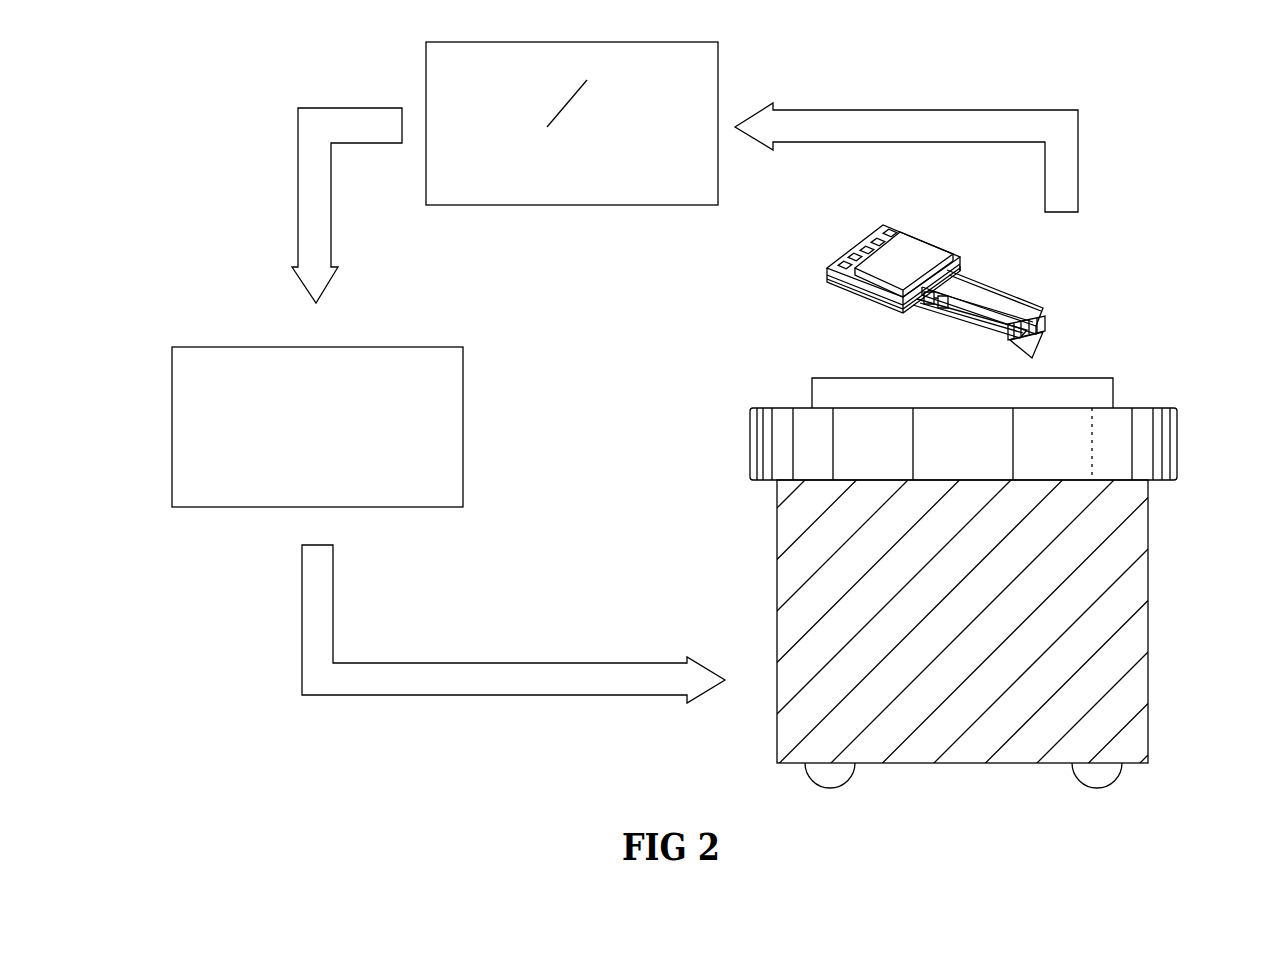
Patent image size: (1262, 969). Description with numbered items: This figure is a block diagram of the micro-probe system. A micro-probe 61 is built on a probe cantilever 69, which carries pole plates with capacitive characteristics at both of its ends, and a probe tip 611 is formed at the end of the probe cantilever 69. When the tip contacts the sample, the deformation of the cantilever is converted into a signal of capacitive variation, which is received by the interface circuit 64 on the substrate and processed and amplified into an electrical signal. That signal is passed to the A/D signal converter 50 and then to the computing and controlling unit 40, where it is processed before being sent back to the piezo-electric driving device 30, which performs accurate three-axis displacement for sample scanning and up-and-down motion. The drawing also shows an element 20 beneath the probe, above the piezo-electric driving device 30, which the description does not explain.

The rotating disc / sample holder 20 is at (1050, 393).
The piezo-electric driving device 30 is at (1103, 605).
The computing and controlling unit 40 is at (420, 433).
The A/D signal converter 50 is at (618, 65).
The micro-probe 61 is at (978, 287).
The probe tip 611 is at (1037, 343).
The interface circuit 64 is at (907, 252).
The probe cantilever 69 is at (977, 317).